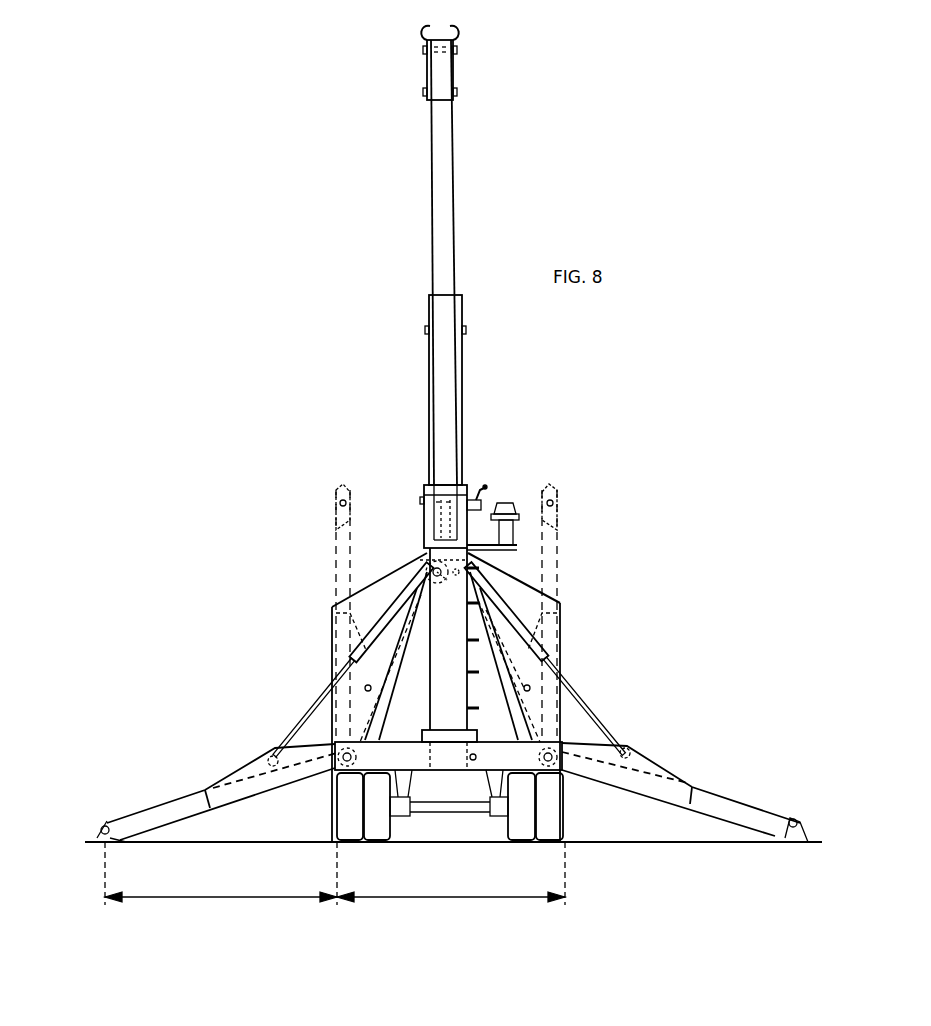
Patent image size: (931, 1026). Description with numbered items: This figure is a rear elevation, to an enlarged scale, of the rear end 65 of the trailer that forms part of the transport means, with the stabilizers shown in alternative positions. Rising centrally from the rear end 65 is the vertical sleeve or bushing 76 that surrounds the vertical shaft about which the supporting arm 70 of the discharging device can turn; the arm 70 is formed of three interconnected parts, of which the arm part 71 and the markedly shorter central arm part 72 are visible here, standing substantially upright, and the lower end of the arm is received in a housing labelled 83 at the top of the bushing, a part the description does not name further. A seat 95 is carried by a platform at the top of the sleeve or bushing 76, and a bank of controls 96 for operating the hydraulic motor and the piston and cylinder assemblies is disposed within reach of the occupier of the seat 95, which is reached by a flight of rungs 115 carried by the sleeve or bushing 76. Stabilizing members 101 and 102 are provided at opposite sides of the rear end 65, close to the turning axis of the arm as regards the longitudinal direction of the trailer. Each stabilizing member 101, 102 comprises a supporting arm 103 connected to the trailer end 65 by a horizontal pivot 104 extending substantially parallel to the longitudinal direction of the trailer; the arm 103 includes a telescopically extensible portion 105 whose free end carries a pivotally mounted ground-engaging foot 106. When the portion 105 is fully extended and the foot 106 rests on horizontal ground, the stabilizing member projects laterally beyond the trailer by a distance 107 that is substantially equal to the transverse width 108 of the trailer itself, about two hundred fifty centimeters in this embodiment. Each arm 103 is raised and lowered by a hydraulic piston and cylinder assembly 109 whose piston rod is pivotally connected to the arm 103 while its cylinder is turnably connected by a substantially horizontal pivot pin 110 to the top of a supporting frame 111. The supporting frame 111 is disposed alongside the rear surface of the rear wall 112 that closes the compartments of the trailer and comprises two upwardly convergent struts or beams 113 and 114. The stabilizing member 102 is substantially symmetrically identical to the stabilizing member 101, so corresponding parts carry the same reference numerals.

The rear end of the trailer 65 is at (428, 775).
The supporting arm 70 is at (458, 176).
The arm part 71 is at (433, 246).
The arm part 72 is at (439, 24).
The vertical sleeve or bushing 76 is at (440, 670).
The mast housing 83 is at (428, 500).
The seat 95 is at (513, 546).
The bank of controls 96 is at (486, 494).
The stabilizing member 101 is at (247, 768).
The stabilizing member 102 is at (662, 768).
The supporting arm 103 is at (244, 790).
The horizontal pivot 104 is at (338, 768).
The telescopically extensible portion 105 is at (333, 557).
The ground-engaging foot 106 is at (135, 836).
The projection distance 107 is at (222, 888).
The transverse width of the trailer 108 is at (460, 888).
The hydraulic piston and cylinder assembly 109 is at (348, 652).
The horizontal pivot pin 110 is at (430, 568).
The supporting frame 111 is at (430, 576).
The rear wall 112 is at (548, 582).
The strut or beam 113 is at (380, 734).
The strut or beam 114 is at (520, 716).
The flight of rungs 115 is at (480, 678).